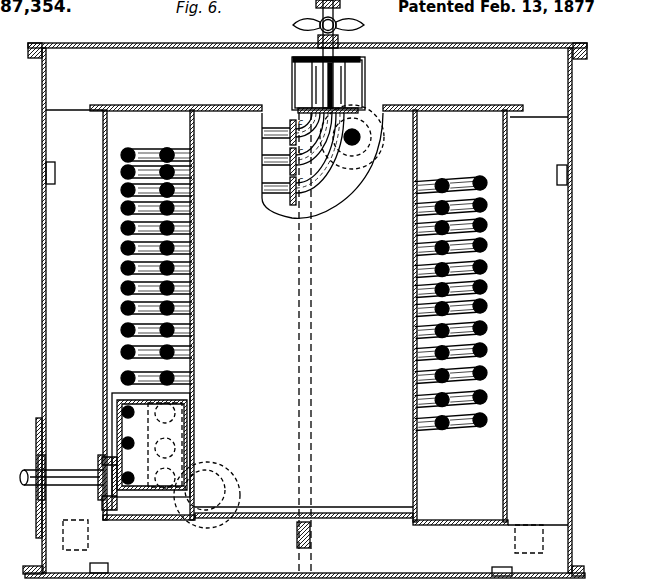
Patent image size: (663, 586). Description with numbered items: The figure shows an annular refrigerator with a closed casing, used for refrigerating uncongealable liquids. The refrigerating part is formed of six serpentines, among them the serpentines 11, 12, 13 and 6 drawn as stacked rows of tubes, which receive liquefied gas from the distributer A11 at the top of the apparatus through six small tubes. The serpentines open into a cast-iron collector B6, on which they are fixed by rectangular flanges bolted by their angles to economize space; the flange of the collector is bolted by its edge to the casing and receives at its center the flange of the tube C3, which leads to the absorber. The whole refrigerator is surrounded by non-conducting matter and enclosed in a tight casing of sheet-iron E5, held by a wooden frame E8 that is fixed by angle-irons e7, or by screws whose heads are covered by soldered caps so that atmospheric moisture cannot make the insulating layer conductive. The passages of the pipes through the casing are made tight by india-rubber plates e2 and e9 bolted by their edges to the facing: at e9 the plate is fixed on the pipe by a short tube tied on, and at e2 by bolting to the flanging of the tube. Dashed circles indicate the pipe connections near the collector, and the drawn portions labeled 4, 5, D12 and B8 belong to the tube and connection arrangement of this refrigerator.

The tight casing of sheet-iron E5 is at (303, 310).
The wooden frame E8 is at (290, 535).
The india-rubber plate e2 is at (31, 478).
The angle-irons e7 is at (306, 369).
The india-rubber plate e9 is at (332, 54).
The distributer A11 is at (328, 85).
The pipe section D12 is at (352, 137).
The serpentine 11 is at (150, 155).
The serpentine 12 is at (150, 172).
The serpentine 13 is at (150, 190).
The tube connection 4 is at (173, 155).
The tube connection 5 is at (173, 172).
The serpentine 6 is at (172, 190).
The cast-iron collector B6 is at (151, 445).
The tube leading to the absorber C3 is at (68, 481).
The pipe connection B8 is at (207, 495).